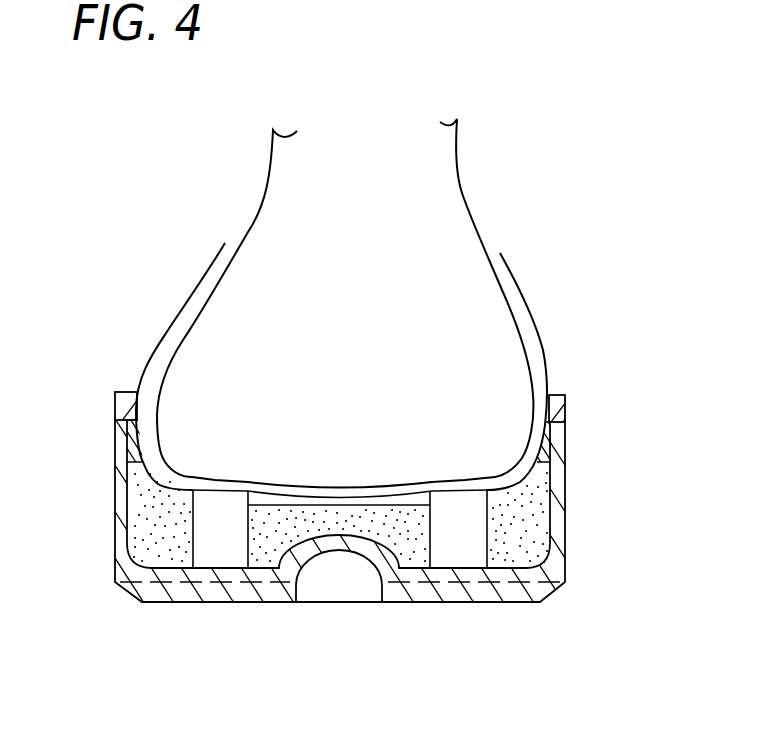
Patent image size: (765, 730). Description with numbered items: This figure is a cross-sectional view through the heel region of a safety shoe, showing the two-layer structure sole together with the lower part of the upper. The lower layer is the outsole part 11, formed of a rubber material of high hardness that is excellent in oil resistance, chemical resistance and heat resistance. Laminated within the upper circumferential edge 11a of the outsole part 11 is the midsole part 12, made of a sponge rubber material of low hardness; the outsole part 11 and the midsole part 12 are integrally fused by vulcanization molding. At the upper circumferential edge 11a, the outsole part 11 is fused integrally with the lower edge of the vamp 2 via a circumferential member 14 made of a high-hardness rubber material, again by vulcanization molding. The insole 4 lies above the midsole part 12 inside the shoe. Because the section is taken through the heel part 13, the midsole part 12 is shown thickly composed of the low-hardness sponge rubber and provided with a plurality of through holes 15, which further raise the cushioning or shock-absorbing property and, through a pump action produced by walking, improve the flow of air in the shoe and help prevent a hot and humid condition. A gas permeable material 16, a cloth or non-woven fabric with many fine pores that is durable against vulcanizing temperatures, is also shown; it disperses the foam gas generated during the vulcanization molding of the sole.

The vamp 2 is at (532, 319).
The insole 4 is at (382, 487).
The outsole part 11 is at (473, 593).
The upper circumferential edge 11a is at (122, 458).
The midsole part 12 is at (537, 525).
The heel part 13 is at (338, 577).
The circumferential member 14 is at (122, 409).
The through holes 15 is at (234, 491).
The gas permeable material 16 is at (327, 498).